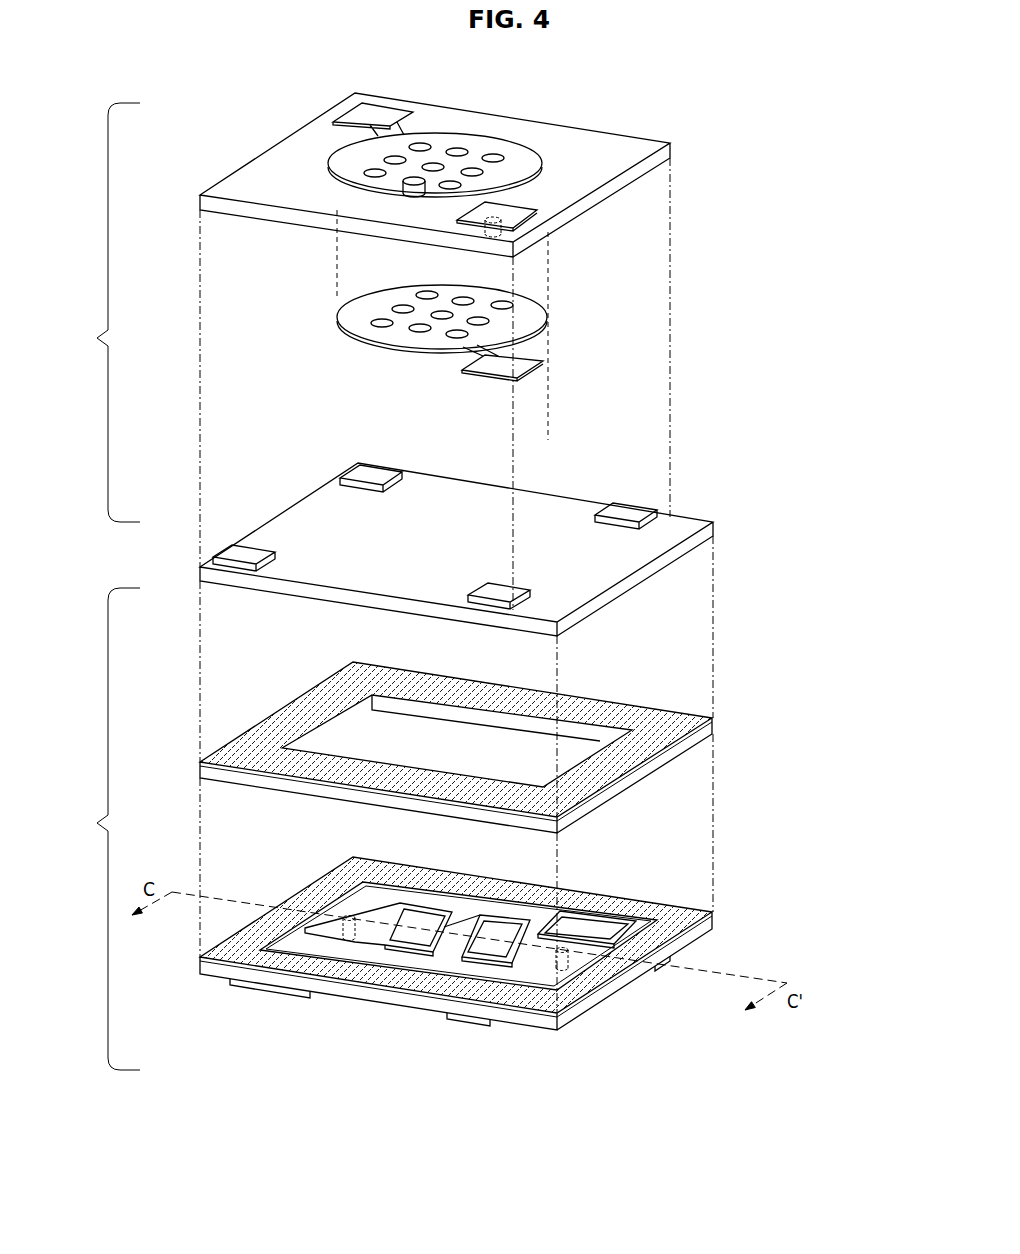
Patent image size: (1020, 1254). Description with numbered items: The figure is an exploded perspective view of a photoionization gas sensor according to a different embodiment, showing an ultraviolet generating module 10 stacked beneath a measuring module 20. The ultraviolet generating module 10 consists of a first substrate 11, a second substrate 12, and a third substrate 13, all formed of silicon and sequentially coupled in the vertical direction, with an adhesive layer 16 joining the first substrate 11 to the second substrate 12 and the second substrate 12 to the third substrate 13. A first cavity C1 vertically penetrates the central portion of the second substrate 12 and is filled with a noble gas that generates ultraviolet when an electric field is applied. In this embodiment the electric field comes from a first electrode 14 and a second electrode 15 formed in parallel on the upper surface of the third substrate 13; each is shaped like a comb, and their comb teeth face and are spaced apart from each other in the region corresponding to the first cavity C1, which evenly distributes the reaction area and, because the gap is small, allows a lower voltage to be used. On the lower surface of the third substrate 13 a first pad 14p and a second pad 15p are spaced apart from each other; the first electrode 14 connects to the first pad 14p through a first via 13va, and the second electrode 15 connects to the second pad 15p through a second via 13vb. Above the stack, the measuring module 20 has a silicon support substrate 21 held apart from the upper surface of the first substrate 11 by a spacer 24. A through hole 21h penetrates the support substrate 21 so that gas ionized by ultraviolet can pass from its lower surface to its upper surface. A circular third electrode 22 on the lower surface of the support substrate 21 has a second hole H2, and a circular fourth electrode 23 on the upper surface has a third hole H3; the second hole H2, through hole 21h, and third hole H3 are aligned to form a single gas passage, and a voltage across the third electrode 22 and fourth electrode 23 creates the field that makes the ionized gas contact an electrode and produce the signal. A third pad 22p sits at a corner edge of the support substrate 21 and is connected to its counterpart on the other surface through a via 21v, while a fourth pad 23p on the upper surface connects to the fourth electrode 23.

The ultraviolet generating module 10 is at (104, 829).
The first substrate 11 is at (205, 575).
The second substrate 12 is at (423, 733).
The third substrate 13 is at (205, 965).
The first via 13va is at (352, 922).
The second via 13vb is at (583, 968).
The first electrode 14 is at (352, 883).
The first pad 14p is at (228, 986).
The second electrode 15 is at (510, 970).
The second pad 15p is at (553, 1030).
The adhesive layer 16 is at (248, 745).
The measuring module 20 is at (102, 312).
The support substrate 21 is at (202, 207).
The through hole 21h is at (418, 178).
The via 21v is at (505, 228).
The third electrode 22 is at (352, 310).
The third pad 22p is at (530, 212).
The fourth electrode 23 is at (352, 152).
The fourth pad 23p is at (345, 100).
The spacer 24 is at (238, 553).
The first cavity C1 is at (438, 728).
The second hole H2 is at (418, 330).
The third hole H3 is at (366, 173).